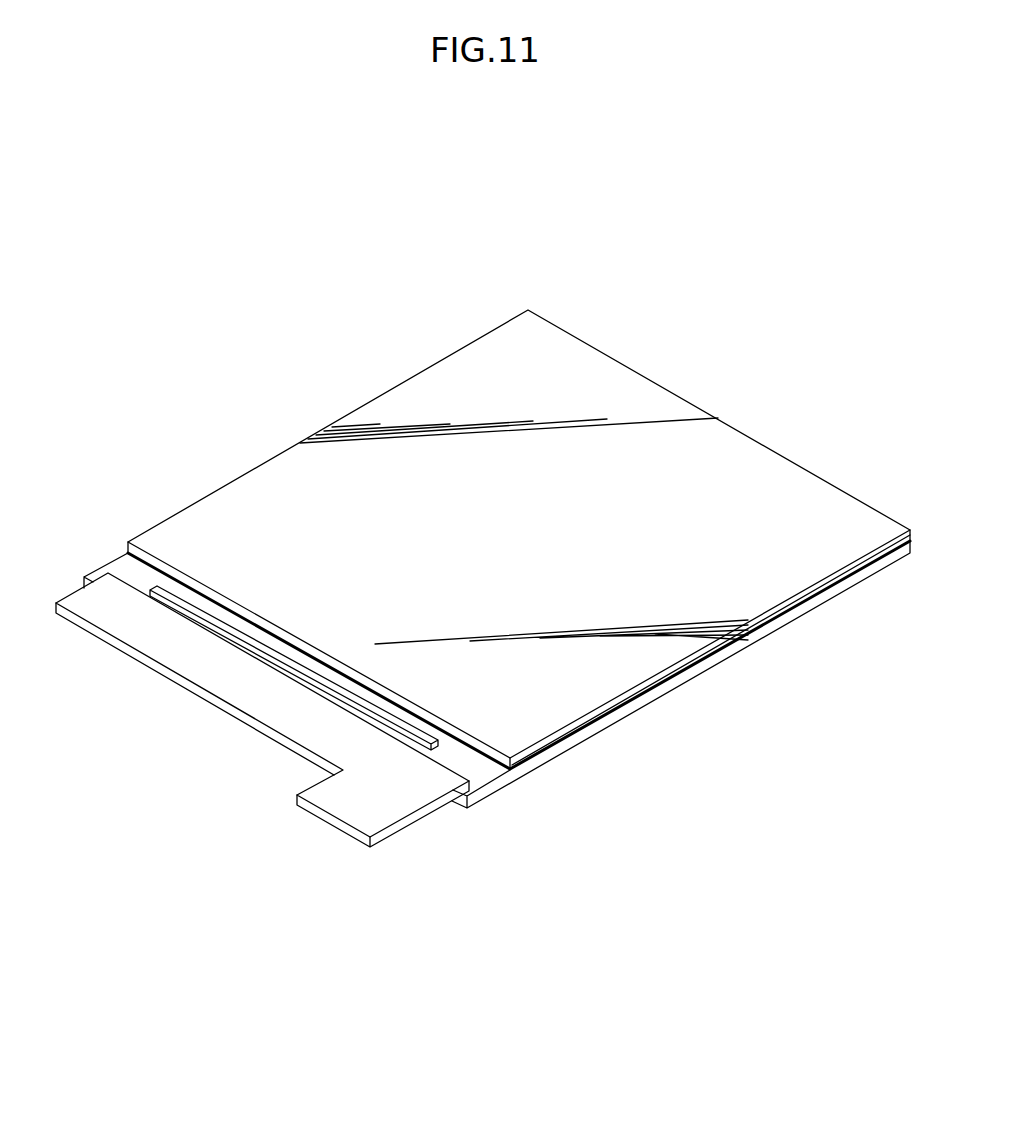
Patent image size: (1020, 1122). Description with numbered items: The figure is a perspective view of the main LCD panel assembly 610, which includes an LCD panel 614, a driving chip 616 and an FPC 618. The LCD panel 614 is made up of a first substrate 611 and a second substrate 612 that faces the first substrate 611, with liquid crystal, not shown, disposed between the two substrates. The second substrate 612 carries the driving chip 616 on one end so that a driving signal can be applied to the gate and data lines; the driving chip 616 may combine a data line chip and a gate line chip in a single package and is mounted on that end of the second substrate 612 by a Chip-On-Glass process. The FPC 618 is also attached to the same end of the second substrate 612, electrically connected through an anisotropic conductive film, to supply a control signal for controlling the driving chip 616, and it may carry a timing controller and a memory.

The main LCD panel assembly 610 is at (497, 554).
The first substrate 611 is at (524, 735).
The second substrate 612 is at (480, 771).
The LCD panel 614 is at (614, 874).
The driving chip 616 is at (186, 598).
The FPC 618 is at (398, 805).